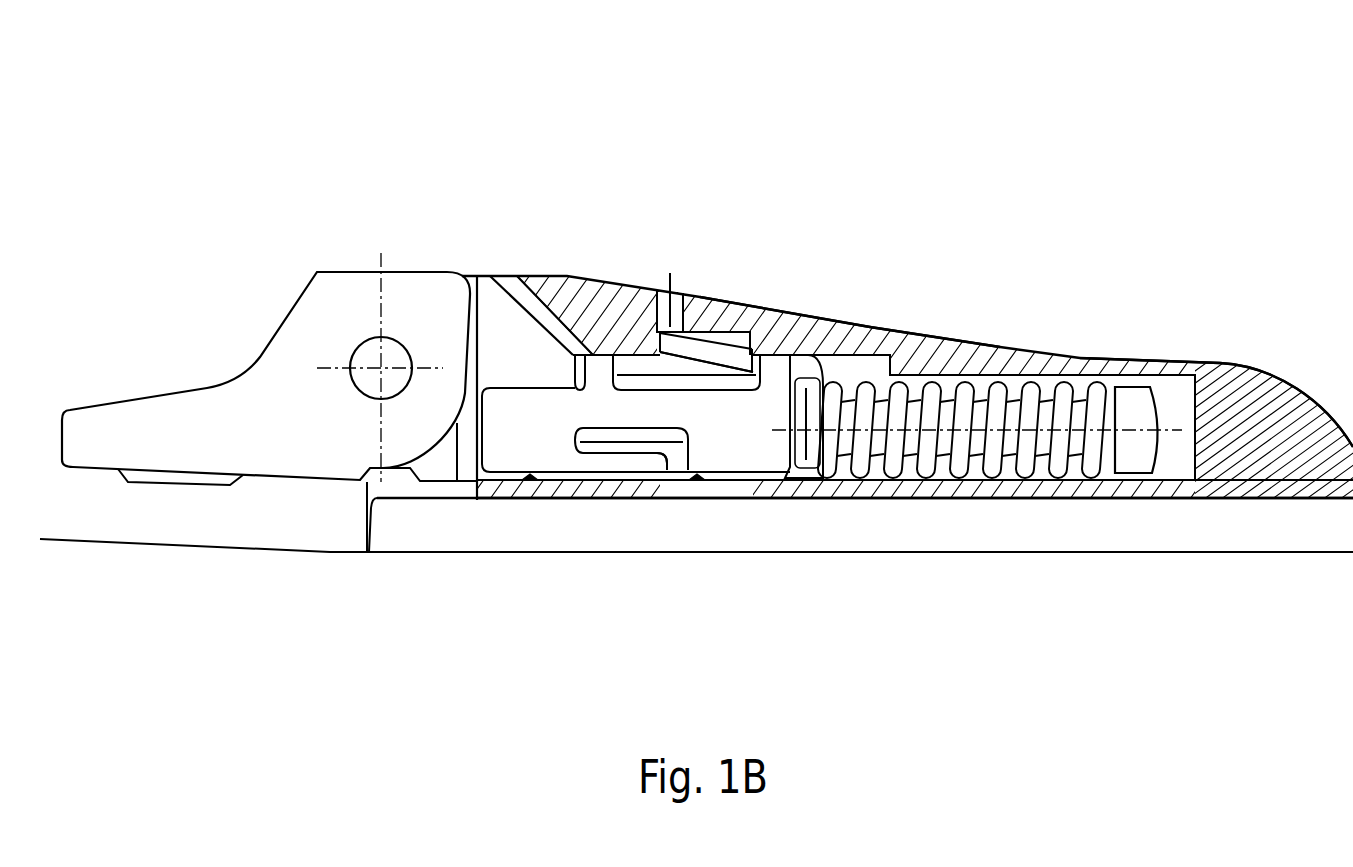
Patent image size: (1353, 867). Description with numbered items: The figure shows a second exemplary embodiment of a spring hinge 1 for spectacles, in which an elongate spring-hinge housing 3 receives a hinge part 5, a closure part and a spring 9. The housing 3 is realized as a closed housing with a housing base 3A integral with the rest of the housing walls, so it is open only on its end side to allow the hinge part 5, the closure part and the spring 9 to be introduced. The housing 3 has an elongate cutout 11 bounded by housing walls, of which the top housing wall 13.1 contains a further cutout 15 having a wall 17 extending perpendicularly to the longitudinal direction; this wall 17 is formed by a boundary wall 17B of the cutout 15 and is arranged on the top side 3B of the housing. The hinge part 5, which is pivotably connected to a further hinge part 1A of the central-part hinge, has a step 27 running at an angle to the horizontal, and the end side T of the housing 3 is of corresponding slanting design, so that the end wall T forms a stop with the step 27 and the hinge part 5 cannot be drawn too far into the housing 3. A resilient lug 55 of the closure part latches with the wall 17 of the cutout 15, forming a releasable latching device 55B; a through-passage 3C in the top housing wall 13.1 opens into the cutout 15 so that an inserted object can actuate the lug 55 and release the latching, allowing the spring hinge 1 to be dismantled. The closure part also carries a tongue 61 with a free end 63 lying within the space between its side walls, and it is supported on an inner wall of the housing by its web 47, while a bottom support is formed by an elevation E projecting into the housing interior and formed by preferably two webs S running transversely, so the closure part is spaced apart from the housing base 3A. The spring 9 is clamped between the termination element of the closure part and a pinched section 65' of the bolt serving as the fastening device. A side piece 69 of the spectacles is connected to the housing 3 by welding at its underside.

The spring hinge 1 is at (497, 120).
The further hinge part 1A is at (178, 422).
The spring-hinge housing 3 is at (893, 350).
The housing base 3A is at (882, 490).
The top side of the housing 3B is at (832, 328).
The through-passage 3C is at (680, 297).
The hinge part 5 is at (488, 303).
The spring 9 is at (1048, 470).
The cutout 11 is at (947, 341).
The housing wall 13.1 is at (765, 352).
The cutout 15 is at (743, 330).
The wall 17 is at (700, 259).
The boundary wall 17B is at (657, 332).
The step 27 is at (540, 313).
The web 47 is at (598, 362).
The resilient lug 55 is at (700, 350).
The releasable latching device 55B is at (668, 362).
The tongue 61 is at (600, 458).
The free end 63 is at (660, 458).
The pinched section 65' is at (1120, 516).
The side piece 69 is at (392, 542).
The end side T is at (532, 273).
The webs S is at (530, 482).
The elevation E is at (696, 482).